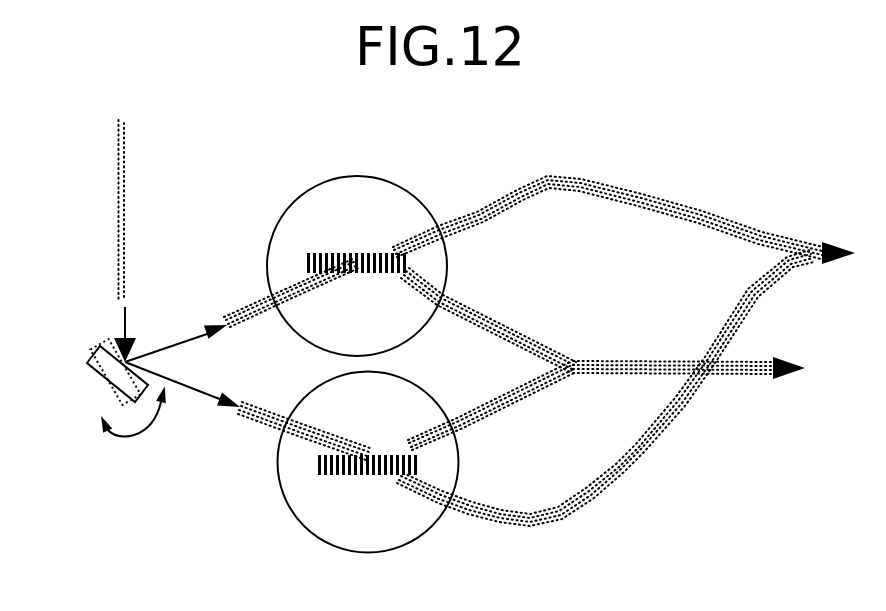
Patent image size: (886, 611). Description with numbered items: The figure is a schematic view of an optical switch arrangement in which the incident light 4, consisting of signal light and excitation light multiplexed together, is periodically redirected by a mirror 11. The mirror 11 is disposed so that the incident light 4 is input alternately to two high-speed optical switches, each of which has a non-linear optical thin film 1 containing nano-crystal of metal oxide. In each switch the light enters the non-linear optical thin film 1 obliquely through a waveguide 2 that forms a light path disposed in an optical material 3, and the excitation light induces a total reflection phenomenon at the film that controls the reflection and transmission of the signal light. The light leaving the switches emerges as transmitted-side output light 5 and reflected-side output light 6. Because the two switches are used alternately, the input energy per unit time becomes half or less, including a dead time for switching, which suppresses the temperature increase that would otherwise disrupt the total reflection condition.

The non-linear optical thin film 1 is at (328, 255).
The waveguide 2 is at (410, 243).
The optical material 3 is at (443, 263).
The incident light 4 is at (125, 320).
The transmitted-side output light 5 is at (813, 252).
The reflected-side output light 6 is at (763, 368).
The mirror 11 is at (110, 373).